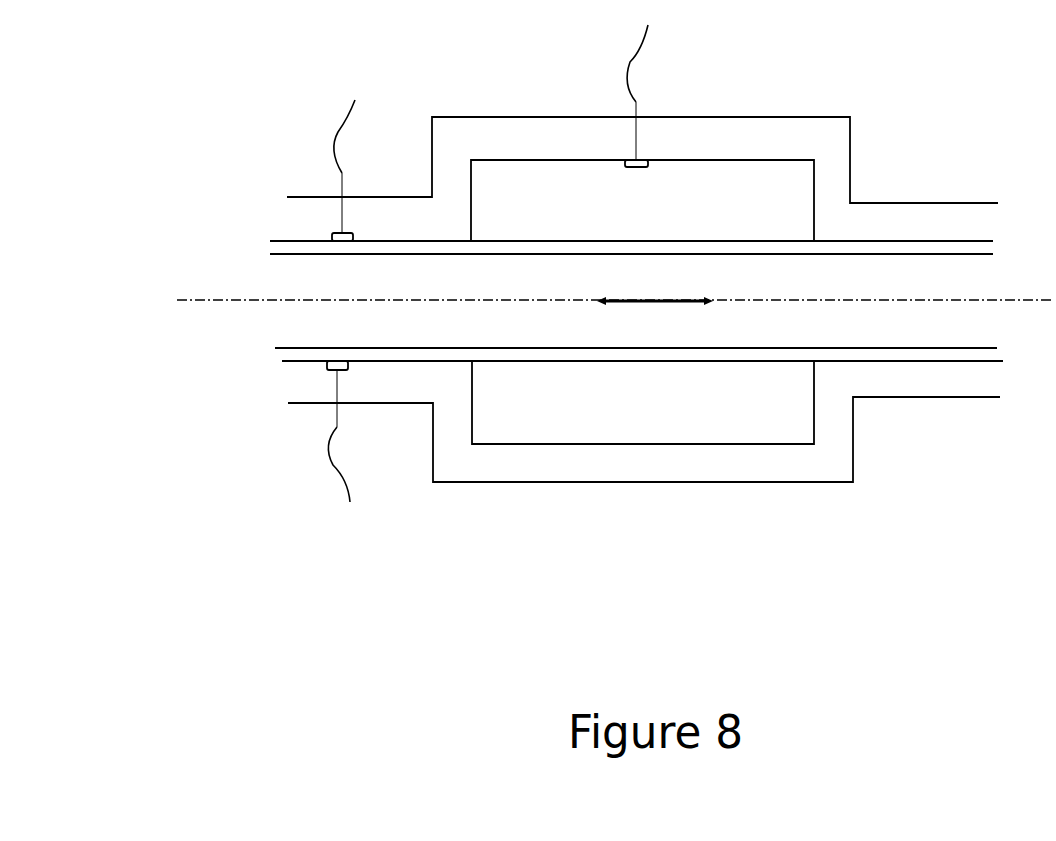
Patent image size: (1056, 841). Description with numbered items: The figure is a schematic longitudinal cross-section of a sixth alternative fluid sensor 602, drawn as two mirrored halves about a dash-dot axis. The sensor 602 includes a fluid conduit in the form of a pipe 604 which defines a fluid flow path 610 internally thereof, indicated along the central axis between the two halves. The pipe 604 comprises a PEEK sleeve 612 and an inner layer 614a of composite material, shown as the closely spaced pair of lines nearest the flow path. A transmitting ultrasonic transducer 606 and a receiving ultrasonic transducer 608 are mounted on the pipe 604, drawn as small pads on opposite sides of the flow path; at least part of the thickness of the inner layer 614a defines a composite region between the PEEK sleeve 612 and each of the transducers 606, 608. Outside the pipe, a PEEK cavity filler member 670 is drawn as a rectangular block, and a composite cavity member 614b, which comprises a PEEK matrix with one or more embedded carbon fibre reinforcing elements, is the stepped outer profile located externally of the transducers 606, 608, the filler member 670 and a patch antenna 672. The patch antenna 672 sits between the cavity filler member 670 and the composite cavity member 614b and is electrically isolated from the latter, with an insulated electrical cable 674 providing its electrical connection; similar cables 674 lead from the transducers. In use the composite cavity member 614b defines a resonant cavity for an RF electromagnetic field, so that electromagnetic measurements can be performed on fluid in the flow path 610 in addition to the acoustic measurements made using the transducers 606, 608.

The sixth alternative fluid sensor 602 is at (412, 658).
The pipe 604 is at (263, 355).
The transmitting ultrasonic transducer 606 is at (330, 377).
The receiving ultrasonic transducer 608 is at (333, 230).
The fluid flow path 610 is at (545, 335).
The PEEK sleeve 612 is at (895, 245).
The inner layer of composite material 614a is at (631, 247).
The composite cavity member 614b is at (745, 137).
The PEEK cavity filler member 670 is at (541, 203).
The patch antenna 672 is at (645, 158).
The insulated electrical cable 674 is at (642, 49).